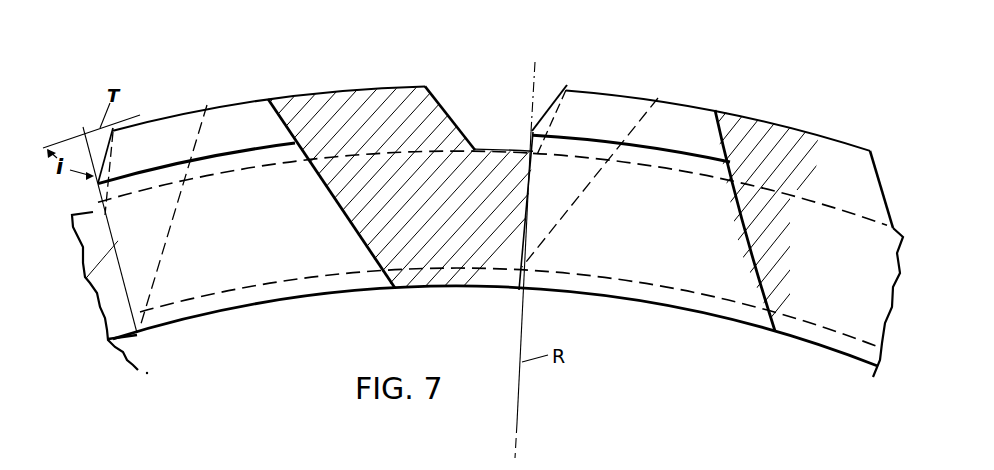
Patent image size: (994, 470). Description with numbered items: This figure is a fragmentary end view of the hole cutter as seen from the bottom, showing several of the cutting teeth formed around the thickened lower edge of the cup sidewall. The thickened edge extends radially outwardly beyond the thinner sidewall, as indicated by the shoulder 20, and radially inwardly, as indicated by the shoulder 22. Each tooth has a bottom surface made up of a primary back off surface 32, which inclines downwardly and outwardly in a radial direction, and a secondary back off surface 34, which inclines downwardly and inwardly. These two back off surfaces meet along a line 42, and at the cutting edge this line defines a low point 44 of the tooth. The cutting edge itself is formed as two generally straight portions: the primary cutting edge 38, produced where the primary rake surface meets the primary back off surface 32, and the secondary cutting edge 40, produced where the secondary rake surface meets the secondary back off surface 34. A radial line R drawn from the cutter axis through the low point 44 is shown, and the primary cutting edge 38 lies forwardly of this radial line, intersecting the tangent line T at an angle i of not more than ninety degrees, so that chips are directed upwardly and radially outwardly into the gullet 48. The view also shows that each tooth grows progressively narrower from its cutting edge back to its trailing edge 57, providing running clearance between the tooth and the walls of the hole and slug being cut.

The shoulder 20 is at (378, 127).
The shoulder 22 is at (343, 283).
The primary back off surface 32 is at (248, 278).
The secondary back off surface 34 is at (181, 119).
The primary cutting edge 38 is at (110, 242).
The secondary cutting edge 40 is at (107, 150).
The line of intersection of back off surfaces 42 is at (213, 160).
The low point 44 is at (100, 185).
The gullet 48 is at (438, 257).
The trailing edge 57 is at (347, 223).